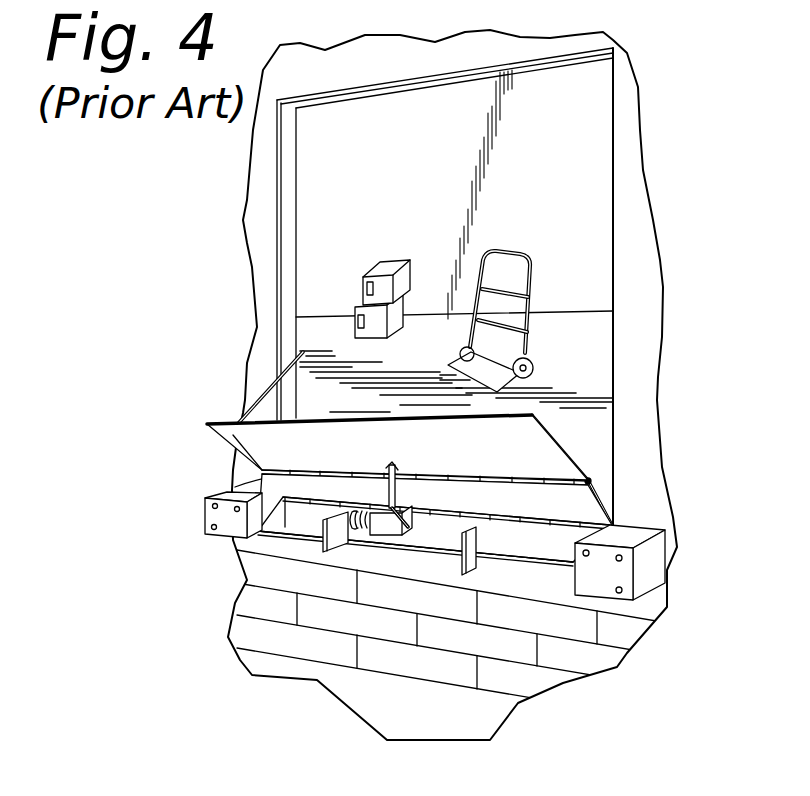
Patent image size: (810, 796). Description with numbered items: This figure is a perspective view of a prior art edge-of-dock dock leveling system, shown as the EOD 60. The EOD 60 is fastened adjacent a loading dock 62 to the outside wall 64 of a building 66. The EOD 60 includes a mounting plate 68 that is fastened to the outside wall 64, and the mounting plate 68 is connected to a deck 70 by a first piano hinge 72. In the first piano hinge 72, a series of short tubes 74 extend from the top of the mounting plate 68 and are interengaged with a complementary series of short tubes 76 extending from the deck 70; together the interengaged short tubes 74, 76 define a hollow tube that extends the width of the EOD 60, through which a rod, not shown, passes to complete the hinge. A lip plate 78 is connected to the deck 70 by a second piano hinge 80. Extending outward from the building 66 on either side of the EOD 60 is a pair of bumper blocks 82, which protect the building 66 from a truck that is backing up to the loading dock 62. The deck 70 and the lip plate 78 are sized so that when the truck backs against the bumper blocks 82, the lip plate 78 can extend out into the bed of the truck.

The edge-of-dock leveler 60 is at (440, 556).
The loading dock 62 is at (409, 358).
The outside wall 64 is at (622, 280).
The building 66 is at (625, 342).
The mounting plate 68 is at (428, 514).
The deck 70 is at (558, 507).
The first piano hinge 72 is at (437, 513).
The short tubes 74 is at (278, 485).
The short tubes 76 is at (277, 473).
The lip plate 78 is at (212, 428).
The second piano hinge 80 is at (246, 413).
The bumper blocks 82 is at (222, 538).